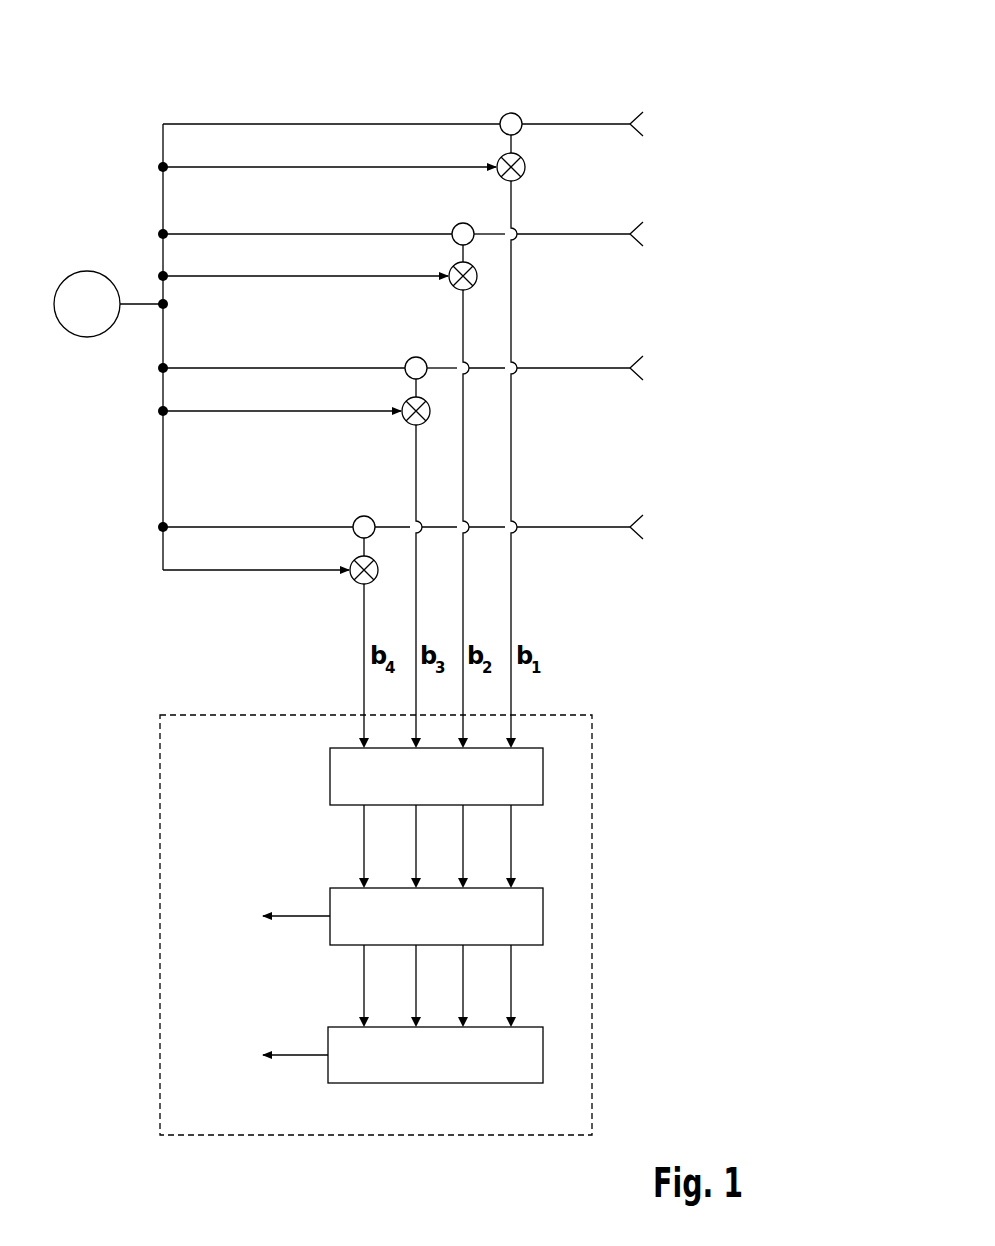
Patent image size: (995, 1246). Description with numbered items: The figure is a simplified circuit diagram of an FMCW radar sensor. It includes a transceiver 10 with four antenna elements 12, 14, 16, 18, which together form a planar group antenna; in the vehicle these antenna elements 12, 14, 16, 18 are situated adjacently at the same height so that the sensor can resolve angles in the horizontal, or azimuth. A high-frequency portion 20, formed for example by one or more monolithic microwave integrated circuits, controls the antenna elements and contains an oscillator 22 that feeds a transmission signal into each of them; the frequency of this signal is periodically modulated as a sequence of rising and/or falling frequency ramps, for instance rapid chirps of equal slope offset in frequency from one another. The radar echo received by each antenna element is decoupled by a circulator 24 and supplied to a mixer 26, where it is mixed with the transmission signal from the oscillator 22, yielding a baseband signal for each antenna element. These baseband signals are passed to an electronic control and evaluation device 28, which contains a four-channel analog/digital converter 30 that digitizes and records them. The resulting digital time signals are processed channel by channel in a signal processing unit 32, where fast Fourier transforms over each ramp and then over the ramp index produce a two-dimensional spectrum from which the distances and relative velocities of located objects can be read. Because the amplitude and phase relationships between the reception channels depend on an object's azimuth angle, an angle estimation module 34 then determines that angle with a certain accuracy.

The transceiver 10 is at (523, 276).
The antenna element 12 is at (628, 117).
The antenna element 14 is at (628, 227).
The antenna element 16 is at (628, 359).
The antenna element 18 is at (628, 519).
The high-frequency portion 20 is at (386, 102).
The oscillator 22 is at (82, 271).
The circulator 24 is at (515, 113).
The mixer 26 is at (457, 224).
The control and evaluation device 28 is at (592, 860).
The analog/digital converter 30 is at (556, 770).
The signal processing unit 32 is at (543, 930).
The angle estimation module 34 is at (556, 1050).